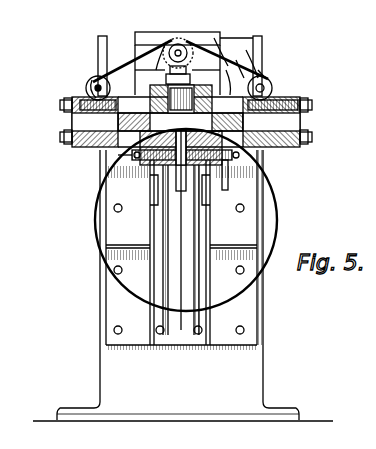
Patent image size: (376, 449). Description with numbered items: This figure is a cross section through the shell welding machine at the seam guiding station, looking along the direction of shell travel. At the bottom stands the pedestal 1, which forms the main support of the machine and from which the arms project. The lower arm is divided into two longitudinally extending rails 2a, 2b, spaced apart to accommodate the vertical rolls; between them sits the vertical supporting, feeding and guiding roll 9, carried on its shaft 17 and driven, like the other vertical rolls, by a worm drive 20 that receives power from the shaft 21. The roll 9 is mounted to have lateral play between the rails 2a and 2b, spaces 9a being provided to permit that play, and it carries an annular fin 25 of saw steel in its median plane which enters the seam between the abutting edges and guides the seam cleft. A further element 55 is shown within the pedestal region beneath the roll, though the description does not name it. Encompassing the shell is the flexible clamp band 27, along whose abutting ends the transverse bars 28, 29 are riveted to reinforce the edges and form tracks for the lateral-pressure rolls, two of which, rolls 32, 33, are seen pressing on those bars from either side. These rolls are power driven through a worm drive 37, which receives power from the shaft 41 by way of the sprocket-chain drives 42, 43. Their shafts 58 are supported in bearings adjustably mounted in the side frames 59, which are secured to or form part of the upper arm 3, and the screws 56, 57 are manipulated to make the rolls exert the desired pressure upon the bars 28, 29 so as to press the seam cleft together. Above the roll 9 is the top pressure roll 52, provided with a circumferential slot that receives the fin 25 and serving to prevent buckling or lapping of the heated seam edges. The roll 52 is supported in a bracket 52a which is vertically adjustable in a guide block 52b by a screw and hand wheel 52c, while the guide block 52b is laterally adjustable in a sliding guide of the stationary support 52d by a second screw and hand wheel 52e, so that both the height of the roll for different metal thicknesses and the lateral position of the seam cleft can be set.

The pedestal 1 is at (100, 372).
The rail 2a is at (212, 236).
The rail 2b is at (148, 236).
The arm 3 is at (158, 38).
The vertical supporting, feeding and guiding roll 9 is at (168, 222).
The spaces 9a is at (156, 190).
The shaft 17 is at (216, 192).
The worm drive 20 is at (152, 170).
The shaft 21 is at (354, 407).
The annular fin 25 is at (184, 195).
The band 27 is at (262, 292).
The transverse bar 28 is at (250, 150).
The transverse bar 29 is at (130, 156).
The lateral-pressure roll 32 is at (72, 122).
The lateral-pressure roll 33 is at (370, 111).
The worm drive 37 is at (90, 80).
The shaft 41 is at (183, 52).
The sprocket-chain drive 42 is at (94, 78).
The sprocket-chain drive 43 is at (232, 80).
The top pressure roll 52 is at (127, 61).
The bracket 52a is at (249, 47).
The guide block 52b is at (264, 74).
The screw and hand wheel 52c is at (216, 40).
The stationary support 52d is at (164, 42).
The screw and hand wheel 52e is at (240, 62).
The rod 55 is at (182, 320).
The screw 56 is at (60, 104).
The screw 57 is at (60, 137).
The shaft 58 is at (130, 155).
The side frame 59 is at (86, 100).